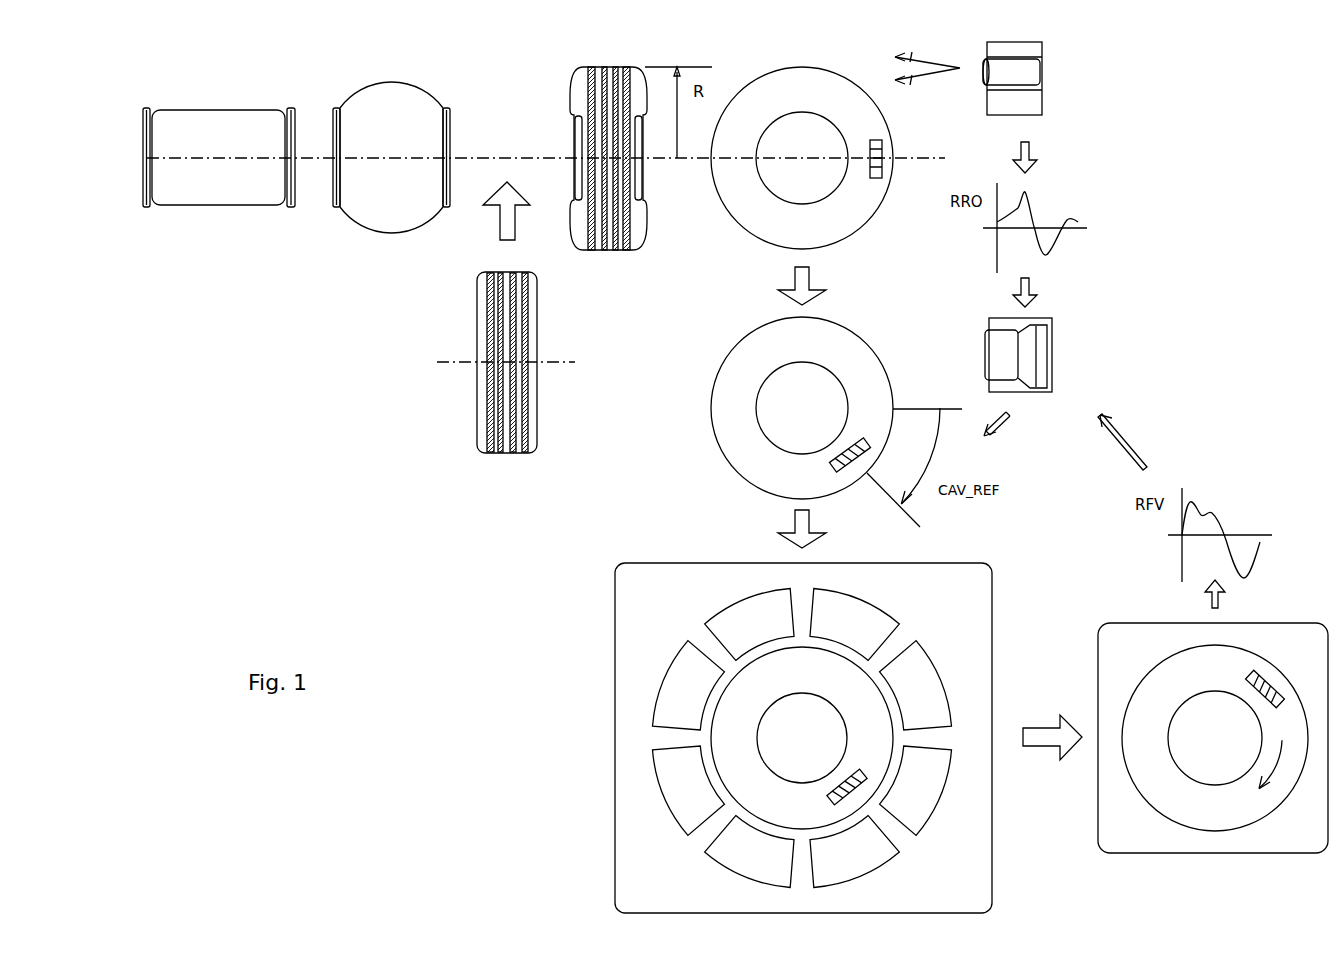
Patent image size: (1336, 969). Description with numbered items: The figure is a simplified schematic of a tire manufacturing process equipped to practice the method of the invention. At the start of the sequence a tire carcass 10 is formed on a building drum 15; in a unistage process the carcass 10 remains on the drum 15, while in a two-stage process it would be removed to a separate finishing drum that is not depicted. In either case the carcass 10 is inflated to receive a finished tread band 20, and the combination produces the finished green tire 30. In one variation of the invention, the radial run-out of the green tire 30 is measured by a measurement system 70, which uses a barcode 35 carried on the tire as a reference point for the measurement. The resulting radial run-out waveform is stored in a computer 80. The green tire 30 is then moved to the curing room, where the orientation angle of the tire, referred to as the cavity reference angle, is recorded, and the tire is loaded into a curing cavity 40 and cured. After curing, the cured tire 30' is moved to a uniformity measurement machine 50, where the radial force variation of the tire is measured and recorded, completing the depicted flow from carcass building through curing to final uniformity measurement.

The tire carcass 10 is at (229, 189).
The building drum 15 is at (144, 111).
The tread band 20 is at (516, 369).
The green tire 30 is at (731, 448).
The barcode 35 is at (869, 142).
The curing cavity 40 is at (670, 615).
The uniformity measurement machine 50 is at (1145, 660).
The measurement system 70 is at (1023, 81).
The computer 80 is at (1018, 355).
The cured tire 30' is at (1215, 738).